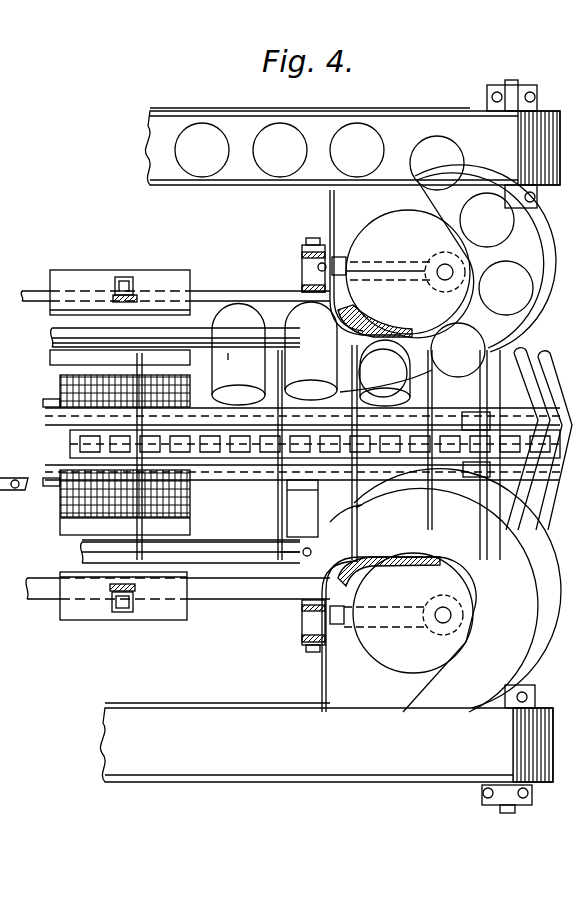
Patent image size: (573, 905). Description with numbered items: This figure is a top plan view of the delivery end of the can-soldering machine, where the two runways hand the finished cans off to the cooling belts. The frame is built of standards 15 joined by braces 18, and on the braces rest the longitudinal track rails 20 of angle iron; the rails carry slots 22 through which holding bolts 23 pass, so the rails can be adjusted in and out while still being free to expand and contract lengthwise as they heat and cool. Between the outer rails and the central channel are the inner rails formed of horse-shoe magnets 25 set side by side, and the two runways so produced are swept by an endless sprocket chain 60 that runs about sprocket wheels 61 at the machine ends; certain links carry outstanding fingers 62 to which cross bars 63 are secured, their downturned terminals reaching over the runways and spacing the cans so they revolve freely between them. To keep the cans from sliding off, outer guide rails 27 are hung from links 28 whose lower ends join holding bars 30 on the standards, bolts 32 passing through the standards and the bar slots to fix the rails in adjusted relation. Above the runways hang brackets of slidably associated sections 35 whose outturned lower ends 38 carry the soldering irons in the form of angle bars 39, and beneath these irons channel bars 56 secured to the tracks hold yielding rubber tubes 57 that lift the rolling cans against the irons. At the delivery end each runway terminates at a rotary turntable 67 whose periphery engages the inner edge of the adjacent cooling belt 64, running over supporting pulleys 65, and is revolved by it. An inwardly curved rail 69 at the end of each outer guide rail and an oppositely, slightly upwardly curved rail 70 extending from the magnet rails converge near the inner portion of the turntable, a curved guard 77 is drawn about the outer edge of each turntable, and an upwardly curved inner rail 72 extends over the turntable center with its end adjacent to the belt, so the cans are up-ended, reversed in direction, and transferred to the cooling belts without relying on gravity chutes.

The cooling belt 64 is at (240, 132).
The supporting pulley 65 is at (537, 110).
The holding bar 30 is at (329, 214).
The rotary turntable 67 is at (420, 441).
The inner rail 72 is at (462, 252).
The bolt 32 is at (347, 262).
The inwardly curved rail 69 is at (362, 332).
The curved guide arm 77 is at (542, 252).
The oppositely curved rail 70 is at (412, 392).
The cross bar 63 is at (540, 356).
The soldering iron 39 is at (185, 272).
The outer guide rail 27 is at (250, 291).
The outturned lower end 38 is at (118, 278).
The bracket section 35 is at (134, 295).
The track rail 20 is at (50, 340).
The channel bar 56 is at (85, 350).
The rubber tube 57 is at (50, 357).
The horse-shoe magnet 25 is at (60, 392).
The sprocket chain 60 is at (72, 444).
The sprocket wheel 61 is at (466, 418).
The outstanding finger 62 is at (466, 470).
The brace 18 is at (310, 513).
The standard 15 is at (302, 255).
The slot 22 is at (318, 267).
The link 28 is at (302, 640).
The holding bolt 23 is at (311, 552).